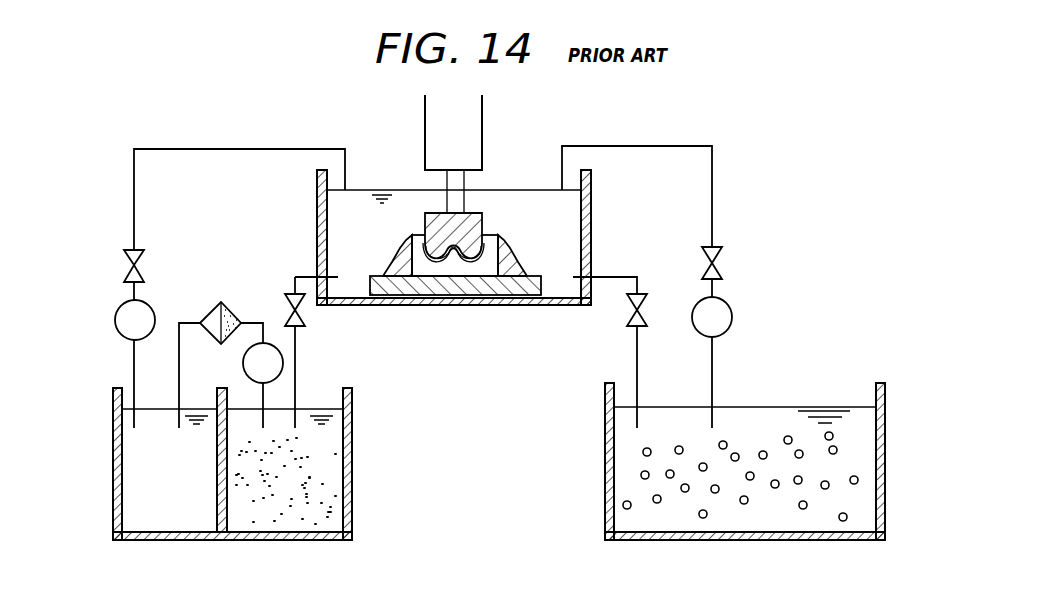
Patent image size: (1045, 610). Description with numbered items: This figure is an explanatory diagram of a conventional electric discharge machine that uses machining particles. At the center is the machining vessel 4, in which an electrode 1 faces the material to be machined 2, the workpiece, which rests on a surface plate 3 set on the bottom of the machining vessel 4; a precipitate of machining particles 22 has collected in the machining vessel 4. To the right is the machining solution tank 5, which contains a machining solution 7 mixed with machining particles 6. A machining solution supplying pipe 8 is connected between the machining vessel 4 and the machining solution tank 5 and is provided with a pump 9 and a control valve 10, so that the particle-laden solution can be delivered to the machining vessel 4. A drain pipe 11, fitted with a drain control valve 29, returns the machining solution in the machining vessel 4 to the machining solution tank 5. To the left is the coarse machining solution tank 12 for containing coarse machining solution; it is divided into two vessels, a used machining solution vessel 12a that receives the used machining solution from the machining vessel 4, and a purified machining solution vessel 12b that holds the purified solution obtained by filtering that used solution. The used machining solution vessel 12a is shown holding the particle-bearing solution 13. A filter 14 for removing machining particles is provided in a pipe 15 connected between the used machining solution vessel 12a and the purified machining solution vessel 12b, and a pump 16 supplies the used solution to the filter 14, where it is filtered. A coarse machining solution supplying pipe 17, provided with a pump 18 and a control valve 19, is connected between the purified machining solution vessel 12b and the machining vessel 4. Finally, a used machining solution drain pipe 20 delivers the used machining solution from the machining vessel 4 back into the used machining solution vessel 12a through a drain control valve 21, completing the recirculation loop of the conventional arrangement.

The electrode 1 is at (433, 263).
The material to be machined 2 is at (460, 270).
The surface plate 3 is at (517, 283).
The machining vessel 4 is at (555, 300).
The machining solution tank 5 is at (752, 540).
The machining particles 6 is at (700, 522).
The machining solution 7 is at (783, 415).
The machining solution supplying pipe 8 is at (712, 200).
The pump 9 is at (732, 317).
The control valve 10 is at (720, 257).
The drain pipe 11 is at (637, 277).
The coarse machining solution tank 12 is at (222, 540).
The used machining solution vessel 12a is at (300, 522).
The purified machining solution vessel 12b is at (168, 515).
The powder suspension 13 is at (332, 446).
The filter 14 is at (229, 312).
The pipe 15 is at (252, 322).
The pump 16 is at (283, 363).
The coarse machining solution supplying pipe 17 is at (134, 210).
The pump 18 is at (150, 308).
The control valve 19 is at (142, 260).
The used machining solution drain pipe 20 is at (296, 340).
The drain control valve 21 is at (304, 310).
The precipitate of machining particles 22 is at (500, 258).
The drain control valve 29 is at (645, 310).